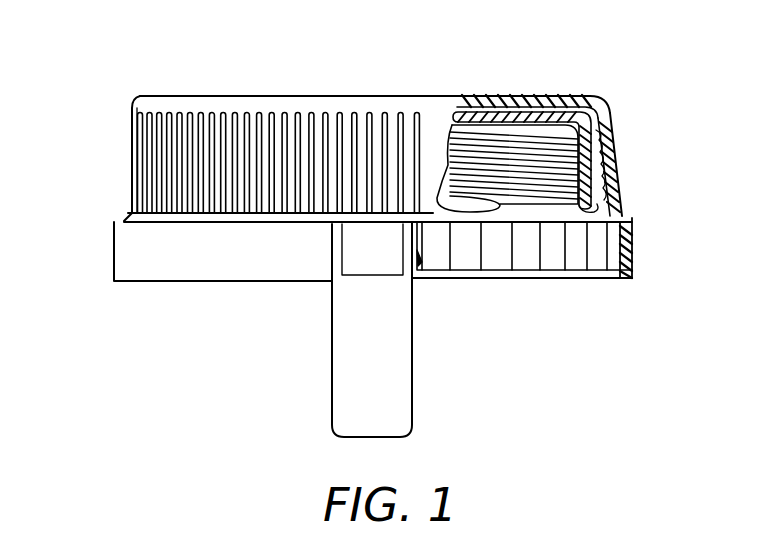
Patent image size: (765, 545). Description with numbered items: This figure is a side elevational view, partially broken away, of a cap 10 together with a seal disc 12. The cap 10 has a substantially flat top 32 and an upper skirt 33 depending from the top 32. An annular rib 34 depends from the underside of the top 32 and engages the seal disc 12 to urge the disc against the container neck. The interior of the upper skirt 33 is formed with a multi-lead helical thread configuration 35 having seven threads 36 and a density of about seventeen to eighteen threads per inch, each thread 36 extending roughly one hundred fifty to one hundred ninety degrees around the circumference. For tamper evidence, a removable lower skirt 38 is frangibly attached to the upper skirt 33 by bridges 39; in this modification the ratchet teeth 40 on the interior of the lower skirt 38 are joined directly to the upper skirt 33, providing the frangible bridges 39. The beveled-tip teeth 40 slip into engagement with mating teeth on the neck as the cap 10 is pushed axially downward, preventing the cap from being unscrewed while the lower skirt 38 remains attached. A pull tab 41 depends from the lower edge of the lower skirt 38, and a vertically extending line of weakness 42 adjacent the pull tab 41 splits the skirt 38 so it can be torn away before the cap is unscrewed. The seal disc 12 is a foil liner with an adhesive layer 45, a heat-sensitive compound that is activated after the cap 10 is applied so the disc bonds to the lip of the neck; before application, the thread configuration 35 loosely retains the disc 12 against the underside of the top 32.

The cap 10 is at (543, 95).
The seal disc 12 is at (483, 108).
The top 32 is at (262, 95).
The upper skirt 33 is at (132, 162).
The annular rib 34 is at (565, 105).
The thread configuration 35 is at (610, 155).
The thread 36 is at (593, 212).
The lower skirt 38 is at (208, 252).
The bridges 39 is at (622, 217).
The ratchet teeth 40 is at (502, 255).
The pull tab 41 is at (400, 392).
The line of weakness 42 is at (420, 255).
The adhesive layer 45 is at (483, 105).